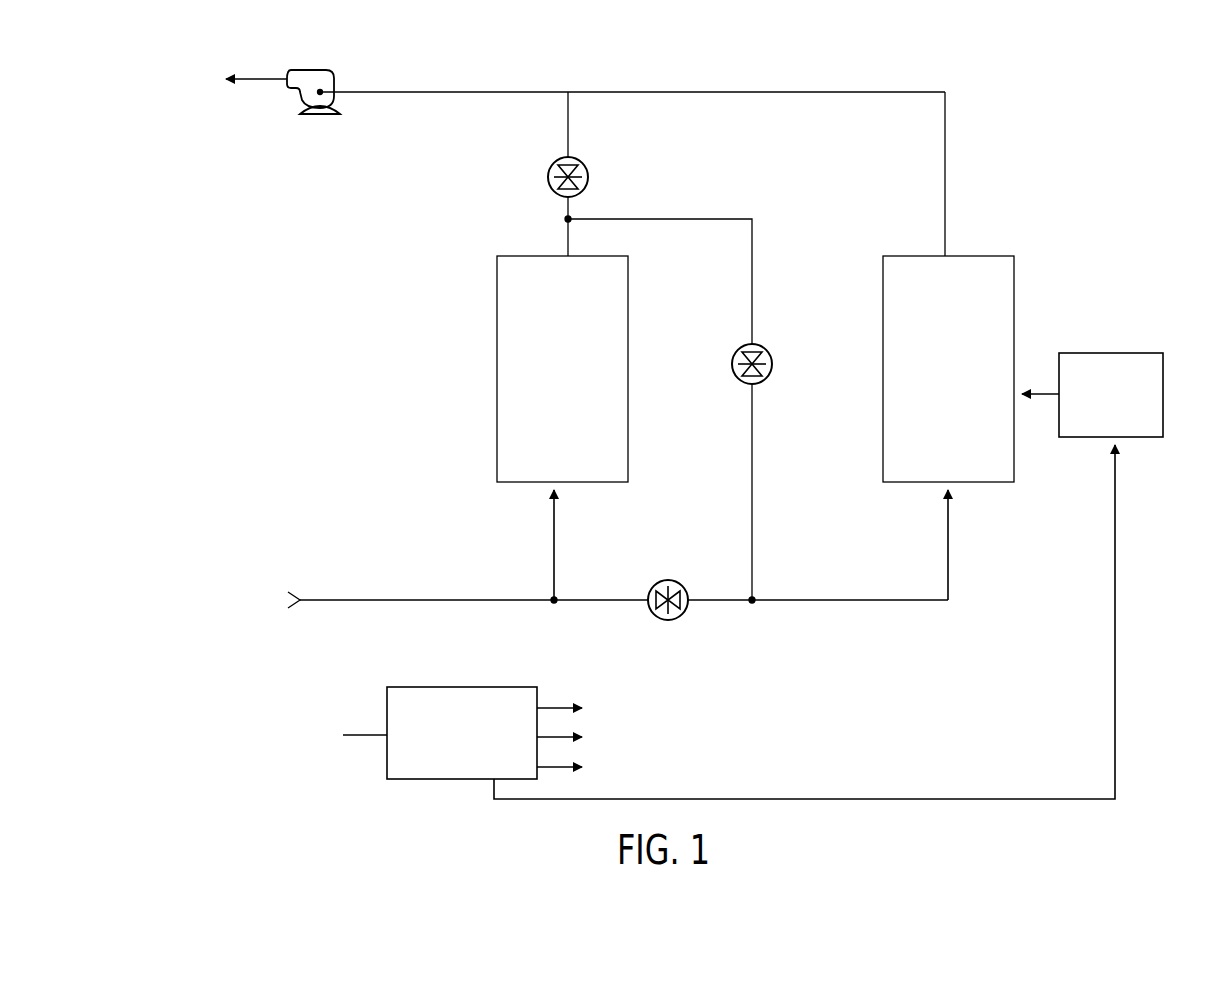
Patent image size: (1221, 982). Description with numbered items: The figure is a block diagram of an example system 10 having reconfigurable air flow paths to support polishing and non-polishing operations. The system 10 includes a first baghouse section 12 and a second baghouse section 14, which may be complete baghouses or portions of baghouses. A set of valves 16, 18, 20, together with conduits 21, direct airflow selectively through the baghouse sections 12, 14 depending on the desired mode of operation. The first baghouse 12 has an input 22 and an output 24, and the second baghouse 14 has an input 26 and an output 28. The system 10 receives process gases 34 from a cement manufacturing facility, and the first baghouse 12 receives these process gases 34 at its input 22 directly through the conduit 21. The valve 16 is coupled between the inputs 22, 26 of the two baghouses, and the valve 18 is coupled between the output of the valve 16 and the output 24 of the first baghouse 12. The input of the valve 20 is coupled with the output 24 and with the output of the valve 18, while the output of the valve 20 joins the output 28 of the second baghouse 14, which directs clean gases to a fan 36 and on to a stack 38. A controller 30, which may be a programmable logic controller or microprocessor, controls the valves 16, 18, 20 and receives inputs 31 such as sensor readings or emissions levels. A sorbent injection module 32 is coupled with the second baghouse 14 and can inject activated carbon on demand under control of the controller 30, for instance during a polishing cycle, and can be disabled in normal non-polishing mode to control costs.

The system 10 is at (1176, 196).
The first baghouse section 12 is at (510, 310).
The second baghouse section 14 is at (1002, 297).
The valve 16 is at (648, 606).
The valve 18 is at (760, 384).
The valve 20 is at (582, 165).
The conduit 21 is at (385, 598).
The input 22 is at (517, 484).
The output 24 is at (526, 255).
The input 26 is at (903, 484).
The output 28 is at (932, 255).
The controller 30 is at (450, 686).
The inputs 31 is at (311, 762).
The sorbent injection module 32 is at (1105, 352).
The process gases 34 is at (238, 646).
The fan 36 is at (336, 76).
The stack 38 is at (194, 123).